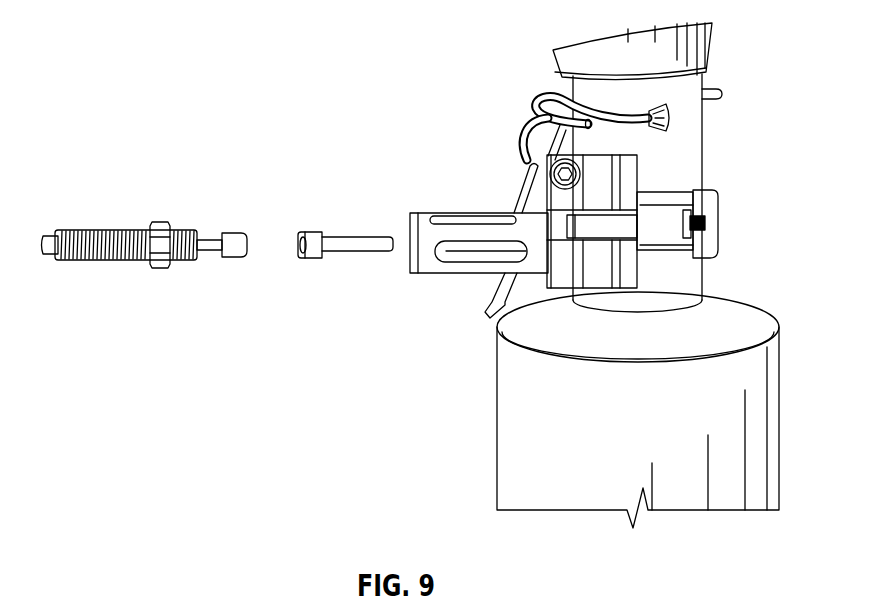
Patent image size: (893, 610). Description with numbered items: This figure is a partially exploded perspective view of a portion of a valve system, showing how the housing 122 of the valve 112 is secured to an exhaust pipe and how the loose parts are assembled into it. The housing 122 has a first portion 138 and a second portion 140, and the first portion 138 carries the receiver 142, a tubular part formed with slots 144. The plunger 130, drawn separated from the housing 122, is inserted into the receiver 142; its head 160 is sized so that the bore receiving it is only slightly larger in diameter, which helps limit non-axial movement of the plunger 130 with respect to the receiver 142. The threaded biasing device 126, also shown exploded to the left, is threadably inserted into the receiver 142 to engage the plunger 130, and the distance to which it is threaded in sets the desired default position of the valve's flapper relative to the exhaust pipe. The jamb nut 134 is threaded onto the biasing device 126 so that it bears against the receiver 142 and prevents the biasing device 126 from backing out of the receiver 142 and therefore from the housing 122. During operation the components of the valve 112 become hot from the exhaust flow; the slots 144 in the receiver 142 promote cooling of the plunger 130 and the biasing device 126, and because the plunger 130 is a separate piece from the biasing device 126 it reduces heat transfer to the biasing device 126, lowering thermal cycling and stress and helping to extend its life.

The valve 112 is at (700, 145).
The housing 122 is at (470, 132).
The biasing device 126 is at (115, 230).
The plunger 130 is at (342, 238).
The jamb nut 134 is at (160, 224).
The first portion 138 is at (555, 197).
The second portion 140 is at (722, 222).
The receiver 142 is at (445, 273).
The slots 144 is at (448, 216).
The head 160 is at (305, 234).